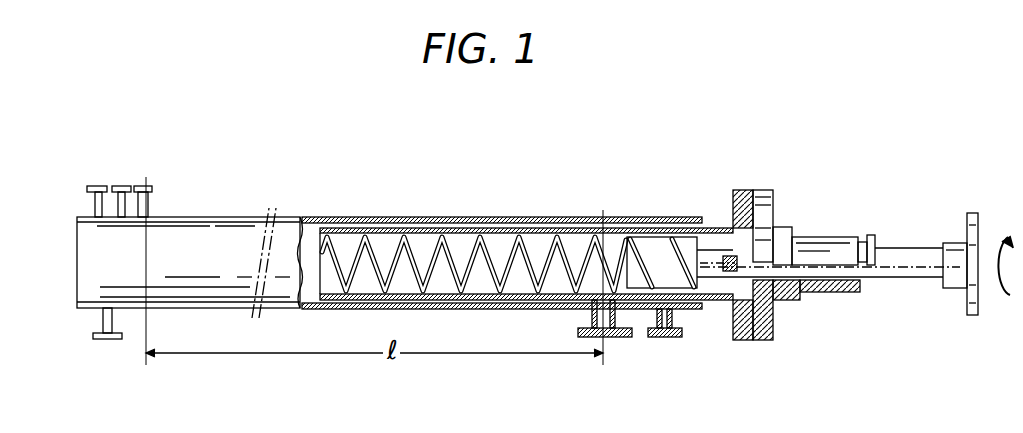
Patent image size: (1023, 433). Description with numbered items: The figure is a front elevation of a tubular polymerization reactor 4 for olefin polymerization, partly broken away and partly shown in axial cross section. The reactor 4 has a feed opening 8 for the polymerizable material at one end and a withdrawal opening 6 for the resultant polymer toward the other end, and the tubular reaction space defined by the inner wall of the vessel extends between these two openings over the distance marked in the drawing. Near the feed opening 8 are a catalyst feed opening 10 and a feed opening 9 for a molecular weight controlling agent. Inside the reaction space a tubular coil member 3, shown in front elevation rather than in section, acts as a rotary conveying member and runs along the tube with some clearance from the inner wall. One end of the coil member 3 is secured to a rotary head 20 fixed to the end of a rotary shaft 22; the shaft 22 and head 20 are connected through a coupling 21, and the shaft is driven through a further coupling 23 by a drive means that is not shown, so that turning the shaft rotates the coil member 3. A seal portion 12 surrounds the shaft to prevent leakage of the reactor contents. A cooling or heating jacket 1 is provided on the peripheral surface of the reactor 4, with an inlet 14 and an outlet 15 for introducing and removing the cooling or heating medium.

The cooling or heating jacket 1 is at (502, 220).
The tubular coil member 3 is at (373, 255).
The tubular polymerization reactor 4 is at (440, 230).
The withdrawal opening 6 is at (611, 338).
The feed opening 8 is at (148, 185).
The feed opening for molecular weight controlling agent 9 is at (122, 185).
The catalyst feed opening 10 is at (95, 185).
The seal portion 12 is at (803, 292).
The inlet 14 is at (669, 338).
The outlet 15 is at (107, 339).
The rotary head 20 is at (655, 245).
The coupling 21 is at (730, 275).
The rotary shaft 22 is at (912, 267).
The coupling 23 is at (976, 305).